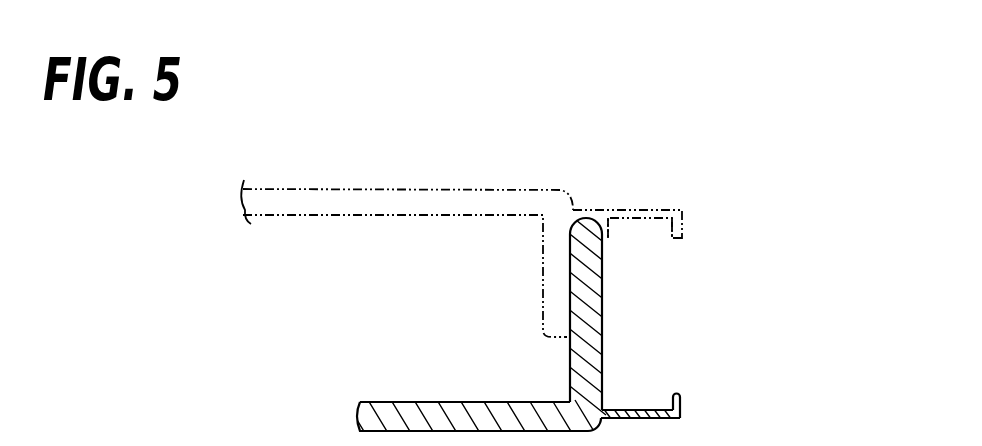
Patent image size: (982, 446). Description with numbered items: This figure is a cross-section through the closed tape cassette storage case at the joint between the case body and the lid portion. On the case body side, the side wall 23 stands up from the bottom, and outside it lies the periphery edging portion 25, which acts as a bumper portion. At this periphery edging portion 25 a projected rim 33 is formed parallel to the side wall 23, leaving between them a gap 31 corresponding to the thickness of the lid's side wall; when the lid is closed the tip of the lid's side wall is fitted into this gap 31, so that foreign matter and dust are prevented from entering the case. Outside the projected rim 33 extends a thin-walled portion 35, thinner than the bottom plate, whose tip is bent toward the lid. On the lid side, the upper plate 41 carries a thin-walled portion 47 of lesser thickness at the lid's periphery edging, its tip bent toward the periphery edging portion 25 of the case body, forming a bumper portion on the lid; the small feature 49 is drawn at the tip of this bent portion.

The side wall 23 is at (543, 257).
The periphery edging portion 25 is at (638, 200).
The gap 31 is at (573, 212).
The projected rim 33 is at (607, 232).
The thin-walled portion 35 is at (655, 218).
The upper plate 41 is at (450, 402).
The thin-walled portion 47 is at (617, 410).
The engaging projection 49 is at (681, 401).